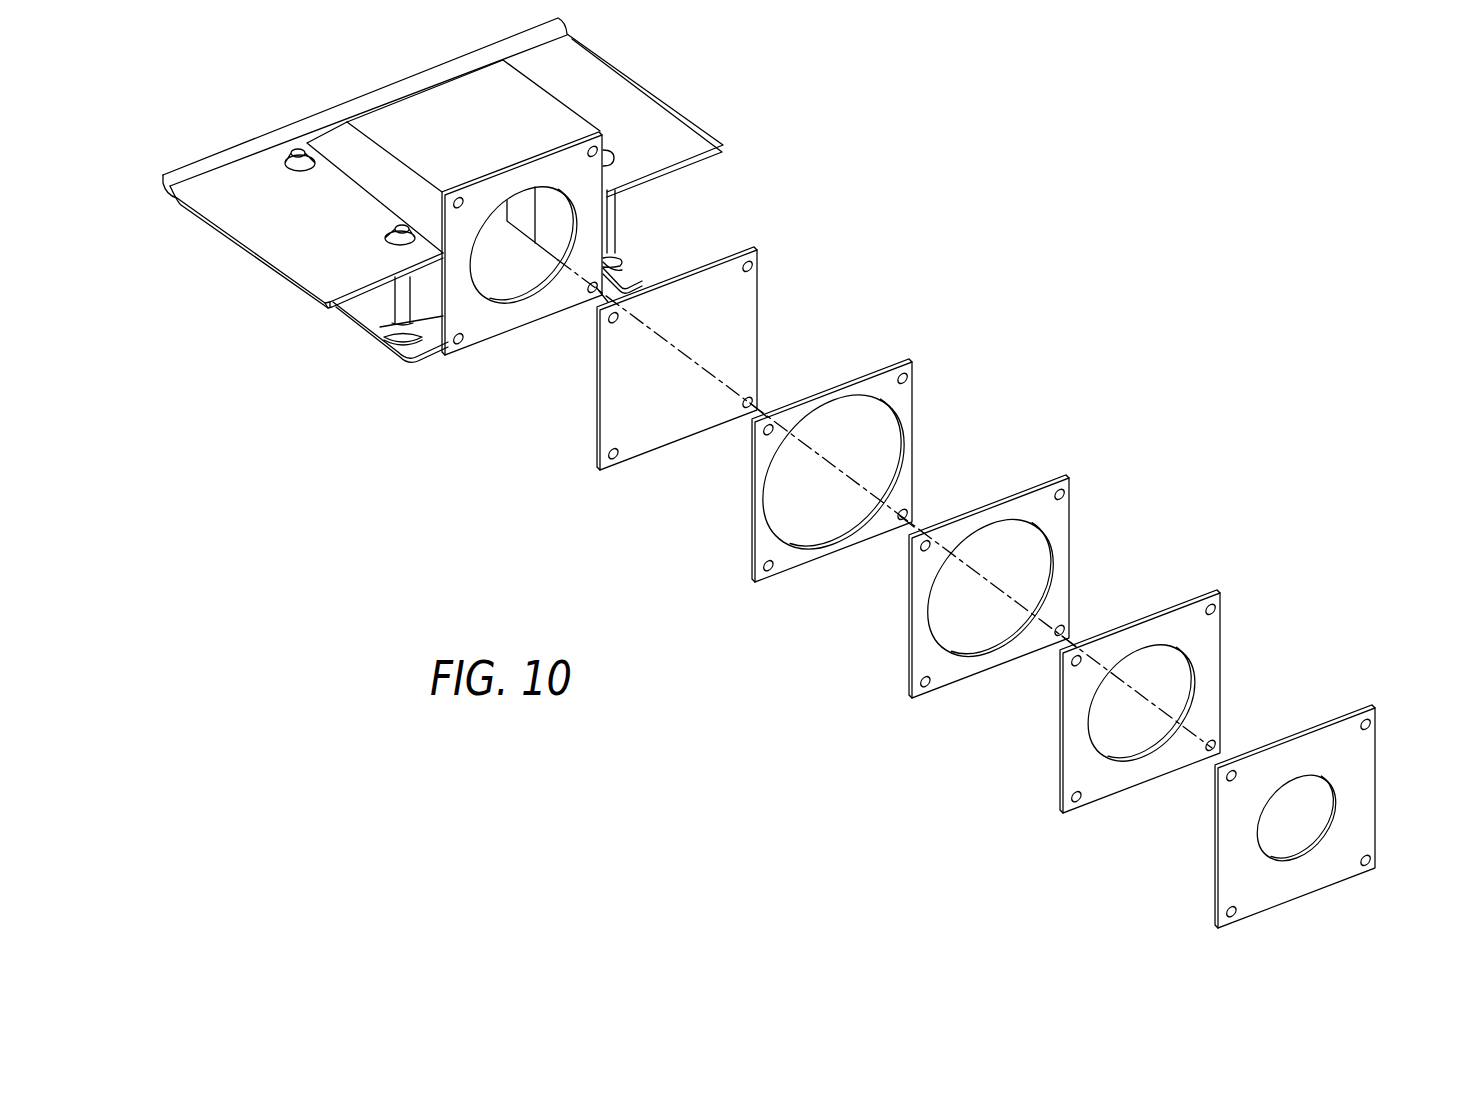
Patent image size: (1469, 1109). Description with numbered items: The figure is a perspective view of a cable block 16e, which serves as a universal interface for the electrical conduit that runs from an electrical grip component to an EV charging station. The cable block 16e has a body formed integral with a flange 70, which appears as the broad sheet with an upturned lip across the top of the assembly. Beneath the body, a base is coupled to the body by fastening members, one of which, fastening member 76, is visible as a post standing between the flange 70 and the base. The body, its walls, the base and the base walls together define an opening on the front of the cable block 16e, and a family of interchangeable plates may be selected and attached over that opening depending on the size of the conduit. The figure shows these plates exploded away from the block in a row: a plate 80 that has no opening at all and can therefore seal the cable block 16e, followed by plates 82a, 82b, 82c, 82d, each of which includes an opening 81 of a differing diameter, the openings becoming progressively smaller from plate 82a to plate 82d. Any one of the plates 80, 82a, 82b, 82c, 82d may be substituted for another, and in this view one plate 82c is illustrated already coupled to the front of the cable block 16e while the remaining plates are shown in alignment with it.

The cable block 16e is at (707, 416).
The flange 70 is at (683, 133).
The fastening member 76 is at (403, 303).
The plate 80 is at (743, 303).
The aperture 81 is at (855, 540).
The plate 82a is at (902, 400).
The plate 82b is at (1060, 530).
The plate 82c is at (590, 208).
The plate 82d is at (1358, 768).